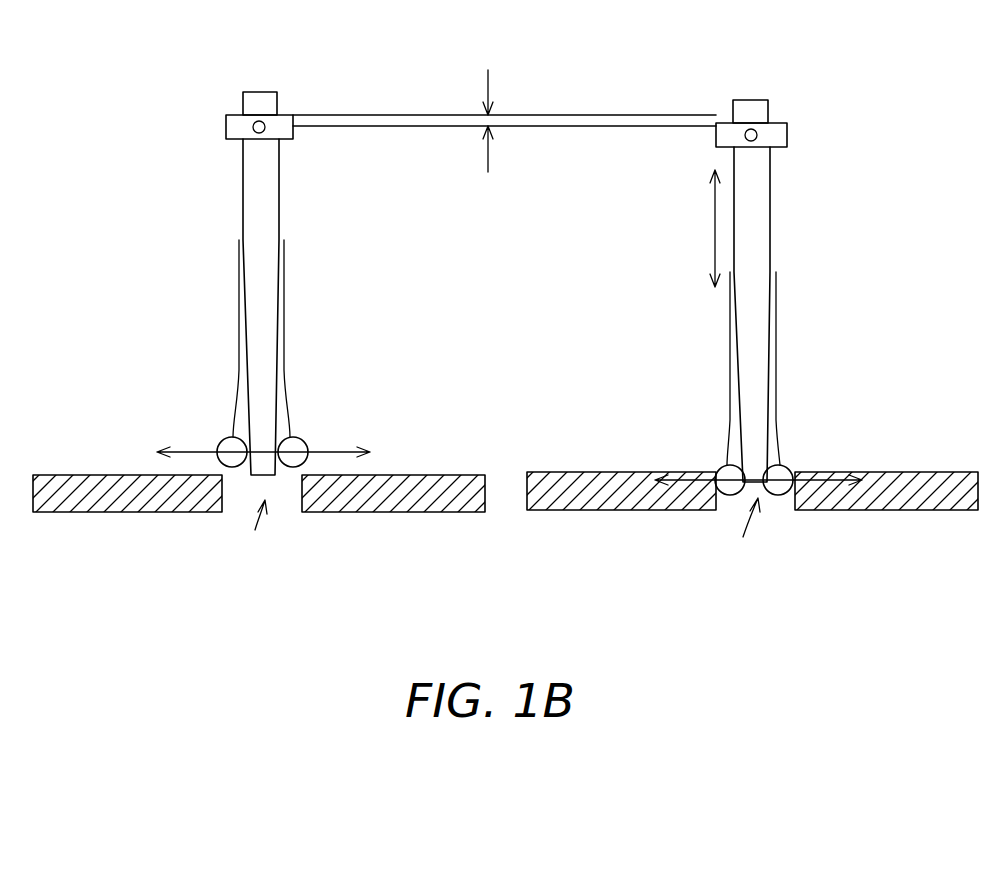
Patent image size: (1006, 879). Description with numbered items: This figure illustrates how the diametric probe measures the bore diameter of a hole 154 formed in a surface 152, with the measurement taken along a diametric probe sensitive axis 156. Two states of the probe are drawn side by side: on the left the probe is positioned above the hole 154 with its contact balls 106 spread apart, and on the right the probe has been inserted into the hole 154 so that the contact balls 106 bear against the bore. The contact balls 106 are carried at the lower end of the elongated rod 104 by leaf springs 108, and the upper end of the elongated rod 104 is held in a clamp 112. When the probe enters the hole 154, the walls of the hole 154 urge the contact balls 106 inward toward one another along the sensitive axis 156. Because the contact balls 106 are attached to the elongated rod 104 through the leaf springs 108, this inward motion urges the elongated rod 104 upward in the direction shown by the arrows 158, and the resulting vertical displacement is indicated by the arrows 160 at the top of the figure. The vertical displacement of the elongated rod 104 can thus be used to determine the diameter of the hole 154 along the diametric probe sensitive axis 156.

The elongated rod 104 is at (279, 190).
The clamp 112 is at (226, 120).
The leaf springs 108 is at (235, 365).
The contact balls 106 is at (222, 440).
The surface 152 is at (57, 500).
The hole 154 is at (472, 538).
The diametric probe sensitive axis 156 is at (343, 450).
The arrows (upward urging of rod) 158 is at (715, 222).
The arrows (amount of displacement) 160 is at (488, 88).